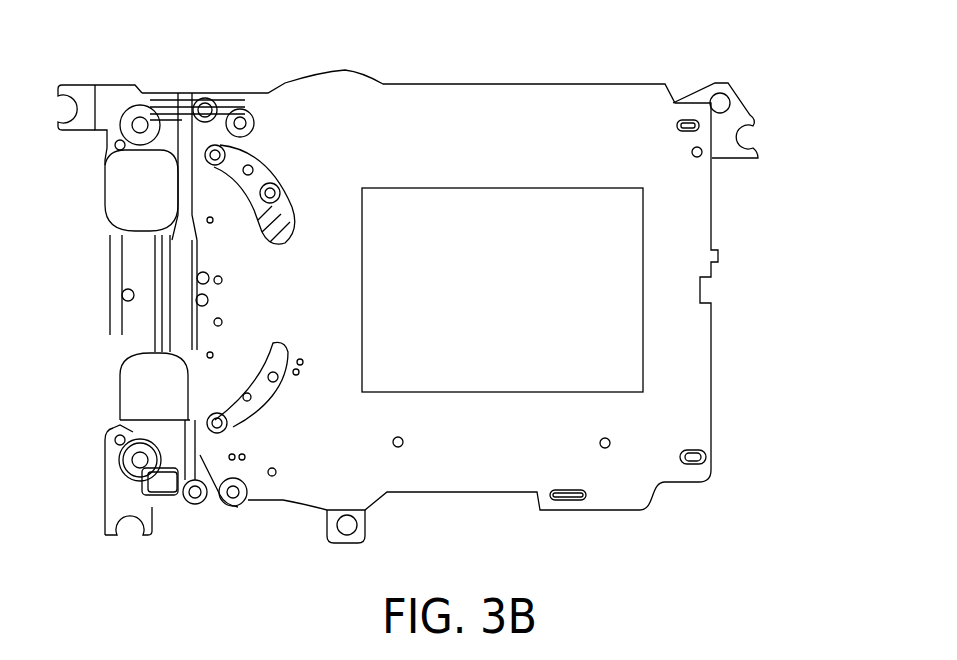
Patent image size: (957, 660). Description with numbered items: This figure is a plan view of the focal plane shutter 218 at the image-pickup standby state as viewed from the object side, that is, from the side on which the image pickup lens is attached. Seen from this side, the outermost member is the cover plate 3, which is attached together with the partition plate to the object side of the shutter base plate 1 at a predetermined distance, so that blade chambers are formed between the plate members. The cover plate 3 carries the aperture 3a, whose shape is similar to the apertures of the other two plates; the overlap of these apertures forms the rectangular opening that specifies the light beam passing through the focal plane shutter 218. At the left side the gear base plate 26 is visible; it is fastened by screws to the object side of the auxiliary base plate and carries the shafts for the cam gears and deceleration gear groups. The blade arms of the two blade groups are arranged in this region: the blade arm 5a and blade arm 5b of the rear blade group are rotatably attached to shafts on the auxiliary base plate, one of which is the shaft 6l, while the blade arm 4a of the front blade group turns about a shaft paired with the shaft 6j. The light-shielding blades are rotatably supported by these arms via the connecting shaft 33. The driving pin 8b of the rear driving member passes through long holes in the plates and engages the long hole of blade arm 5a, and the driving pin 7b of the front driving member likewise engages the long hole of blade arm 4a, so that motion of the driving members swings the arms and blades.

The focal plane shutter 218 is at (812, 40).
The cover plate 3 is at (710, 232).
The aperture 3a is at (550, 188).
The shutter base plate 1 is at (745, 120).
The gear base plate 26 is at (133, 215).
The shaft 6l is at (198, 278).
The shaft 6j is at (197, 300).
The driving pin 8b is at (216, 150).
The blade arm 5a is at (249, 166).
The blade arm 5b is at (276, 182).
The connecting shaft 33 is at (289, 172).
The driving pin 7b is at (210, 421).
The blade arm 4a is at (247, 424).